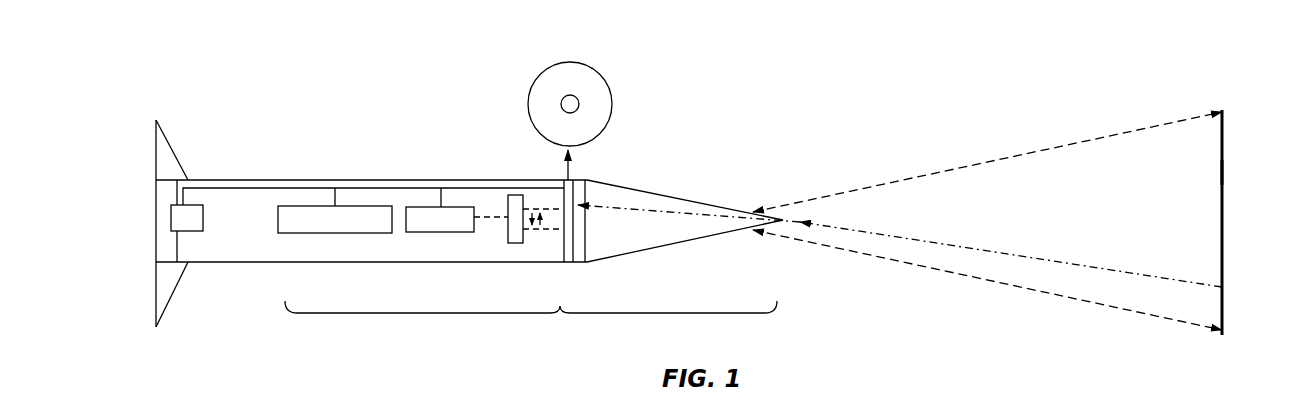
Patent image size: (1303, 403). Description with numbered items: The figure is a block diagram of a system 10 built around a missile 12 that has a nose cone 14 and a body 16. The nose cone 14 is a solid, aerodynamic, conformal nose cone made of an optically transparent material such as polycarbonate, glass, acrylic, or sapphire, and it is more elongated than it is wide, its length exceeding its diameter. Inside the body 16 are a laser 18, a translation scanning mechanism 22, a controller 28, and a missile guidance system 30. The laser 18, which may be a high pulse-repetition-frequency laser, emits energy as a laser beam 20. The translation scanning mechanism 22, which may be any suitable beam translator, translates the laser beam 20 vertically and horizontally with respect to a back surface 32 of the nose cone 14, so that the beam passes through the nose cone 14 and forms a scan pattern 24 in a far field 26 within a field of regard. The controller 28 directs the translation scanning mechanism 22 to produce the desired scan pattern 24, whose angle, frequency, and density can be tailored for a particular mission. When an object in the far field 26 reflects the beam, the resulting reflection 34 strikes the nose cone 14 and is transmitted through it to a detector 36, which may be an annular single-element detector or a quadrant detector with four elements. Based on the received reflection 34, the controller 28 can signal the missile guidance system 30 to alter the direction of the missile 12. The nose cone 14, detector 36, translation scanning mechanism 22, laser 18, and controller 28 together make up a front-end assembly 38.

The system 10 is at (353, 139).
The missile 12 is at (238, 263).
The nose cone 14 is at (635, 200).
The body 16 is at (292, 252).
The laser 18 is at (433, 233).
The laser beam 20 is at (543, 230).
The translation scanning mechanism 22 is at (508, 204).
The scan pattern 24 is at (1221, 171).
The far field 26 is at (1234, 89).
The controller 28 is at (303, 206).
The missile guidance system 30 is at (204, 215).
The back surface 32 is at (589, 192).
The reflection 34 is at (670, 212).
The detector 36 is at (608, 90).
The front-end assembly 38 is at (531, 323).